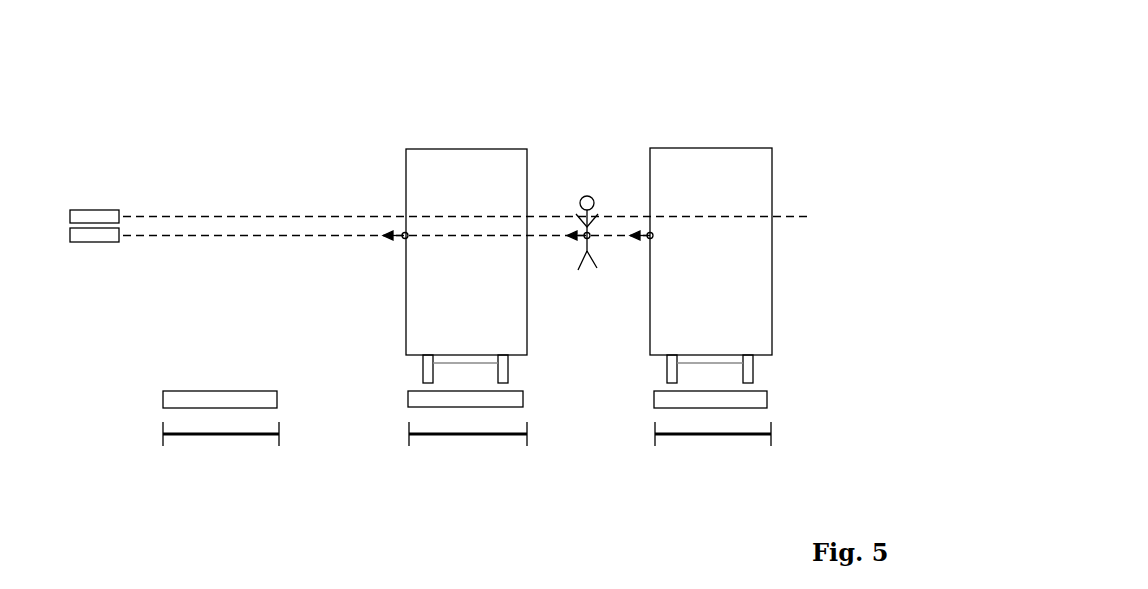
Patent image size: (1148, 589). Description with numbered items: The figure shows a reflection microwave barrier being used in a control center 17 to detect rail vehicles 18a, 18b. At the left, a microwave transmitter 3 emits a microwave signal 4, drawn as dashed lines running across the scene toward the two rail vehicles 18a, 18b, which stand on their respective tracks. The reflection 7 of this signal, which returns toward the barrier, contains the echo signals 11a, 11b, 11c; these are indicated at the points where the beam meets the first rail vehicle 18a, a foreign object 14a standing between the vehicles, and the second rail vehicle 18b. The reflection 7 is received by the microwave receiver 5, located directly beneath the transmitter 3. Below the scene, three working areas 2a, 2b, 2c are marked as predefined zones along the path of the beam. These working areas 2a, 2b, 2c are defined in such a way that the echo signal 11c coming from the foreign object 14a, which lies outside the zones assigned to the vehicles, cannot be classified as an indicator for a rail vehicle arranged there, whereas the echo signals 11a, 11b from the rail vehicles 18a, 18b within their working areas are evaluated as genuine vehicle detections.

The control center 17 is at (122, 96).
The microwave transmitter 3 is at (86, 216).
The microwave signal 4 is at (158, 217).
The microwave receiver 5 is at (106, 236).
The reflection 7 is at (384, 226).
The rail vehicle 18a is at (424, 160).
The rail vehicle 18b is at (669, 160).
The echo signal 11a is at (390, 239).
The echo signal 11b is at (635, 240).
The echo signal 11c is at (567, 234).
The foreign object 14a is at (596, 268).
The working area 2a is at (190, 437).
The working area 2b is at (432, 437).
The working area 2c is at (678, 437).